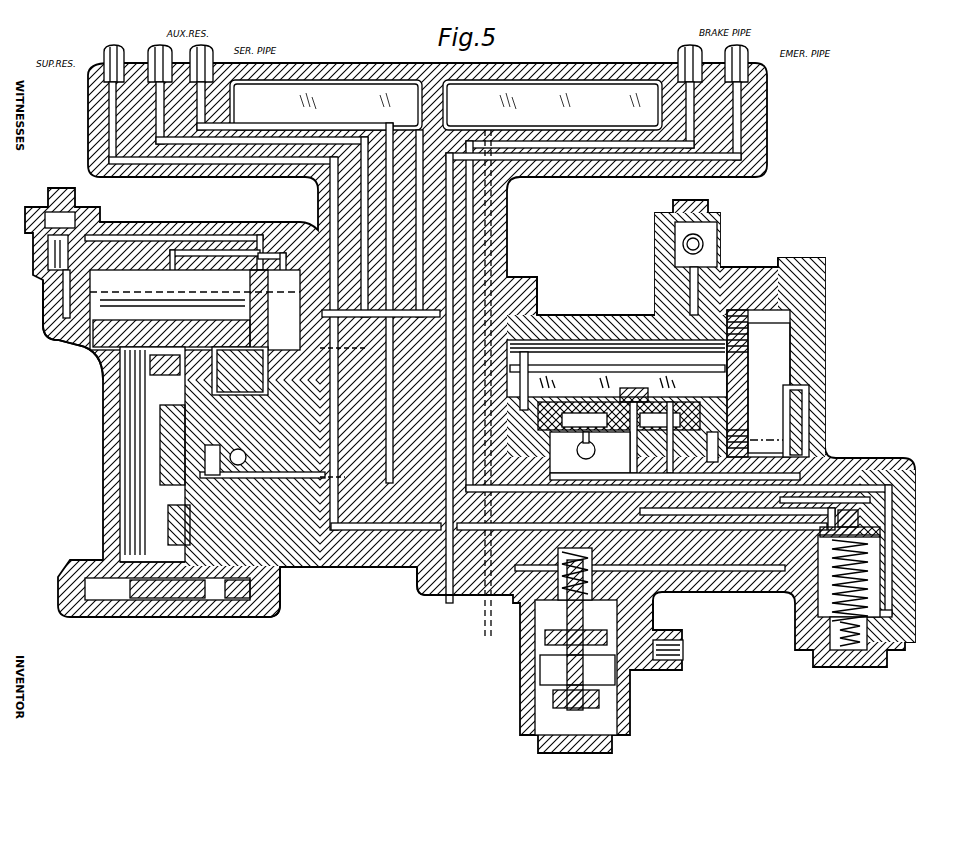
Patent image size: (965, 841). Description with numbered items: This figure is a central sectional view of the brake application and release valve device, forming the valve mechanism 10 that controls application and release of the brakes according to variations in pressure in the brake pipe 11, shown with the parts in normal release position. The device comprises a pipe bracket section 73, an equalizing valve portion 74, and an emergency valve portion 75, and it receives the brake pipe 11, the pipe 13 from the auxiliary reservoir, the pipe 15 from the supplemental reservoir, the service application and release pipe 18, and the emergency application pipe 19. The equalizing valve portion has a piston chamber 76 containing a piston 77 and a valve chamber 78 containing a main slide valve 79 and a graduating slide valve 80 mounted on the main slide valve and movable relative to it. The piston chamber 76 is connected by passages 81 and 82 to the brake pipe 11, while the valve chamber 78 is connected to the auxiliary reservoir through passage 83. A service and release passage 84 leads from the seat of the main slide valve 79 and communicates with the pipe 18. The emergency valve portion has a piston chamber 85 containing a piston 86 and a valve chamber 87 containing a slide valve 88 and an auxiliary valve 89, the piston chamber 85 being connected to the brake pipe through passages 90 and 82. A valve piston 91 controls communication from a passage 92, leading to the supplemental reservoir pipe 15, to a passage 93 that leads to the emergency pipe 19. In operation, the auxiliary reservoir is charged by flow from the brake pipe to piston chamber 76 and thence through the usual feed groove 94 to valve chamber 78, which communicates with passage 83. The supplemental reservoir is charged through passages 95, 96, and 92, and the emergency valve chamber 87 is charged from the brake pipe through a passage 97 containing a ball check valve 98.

The valve mechanism 10 is at (524, 297).
The brake pipe 11 is at (684, 53).
The pipe 13 is at (160, 50).
The pipe 15 is at (107, 56).
The service application and release pipe 18 is at (212, 58).
The emergency application pipe 19 is at (745, 55).
The pipe bracket section 73 is at (440, 600).
The equalizing valve portion 74 is at (282, 570).
The emergency valve portion 75 is at (731, 594).
The piston chamber 76 is at (163, 277).
The piston 77 is at (185, 340).
The valve chamber 78 is at (222, 556).
The main slide valve 79 is at (165, 421).
The graduating slide valve 80 is at (165, 448).
The passage 81 is at (286, 252).
The passage 82 is at (446, 253).
The passage 83 is at (345, 412).
The service and release passage 84 is at (378, 480).
The piston chamber 85 is at (780, 355).
The piston 86 is at (748, 395).
The valve chamber 87 is at (615, 340).
The slide valve 88 is at (548, 405).
The auxiliary valve 89 is at (648, 392).
The passage 90 is at (808, 440).
The valve piston 91 is at (880, 545).
The passage 92 is at (245, 165).
The passage 93 is at (612, 165).
The feed groove 94 is at (240, 371).
The passage 95 is at (60, 336).
The passage 96 is at (80, 265).
The passage 97 is at (730, 282).
The ball check valve 98 is at (712, 238).